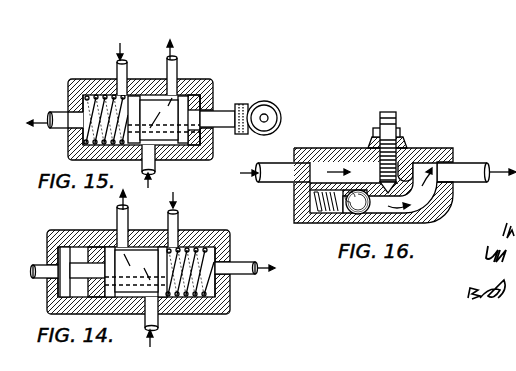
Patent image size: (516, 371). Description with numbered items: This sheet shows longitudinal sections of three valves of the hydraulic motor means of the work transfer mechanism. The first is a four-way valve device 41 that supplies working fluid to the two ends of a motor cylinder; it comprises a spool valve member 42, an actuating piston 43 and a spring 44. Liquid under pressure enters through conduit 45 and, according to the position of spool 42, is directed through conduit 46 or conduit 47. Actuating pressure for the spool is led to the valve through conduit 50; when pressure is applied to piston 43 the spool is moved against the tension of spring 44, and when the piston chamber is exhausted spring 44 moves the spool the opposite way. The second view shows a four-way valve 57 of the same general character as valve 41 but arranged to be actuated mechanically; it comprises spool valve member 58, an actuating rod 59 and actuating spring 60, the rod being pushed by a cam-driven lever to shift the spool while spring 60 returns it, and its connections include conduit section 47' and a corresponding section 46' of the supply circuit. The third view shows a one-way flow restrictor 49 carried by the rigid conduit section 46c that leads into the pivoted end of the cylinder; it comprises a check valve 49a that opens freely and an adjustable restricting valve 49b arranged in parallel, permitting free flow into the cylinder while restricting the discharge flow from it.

In FIG. 14, the four-way valve device 41 is at (227, 313).
In FIG. 14, the spool valve member 42 is at (140, 258).
In FIG. 14, the actuating piston 43 is at (62, 257).
In FIG. 14, the spring 44 is at (230, 287).
In FIG. 15, the conduit 45 is at (154, 163).
In FIG. 14, the conduit 45 is at (157, 320).
In FIG. 14, the conduit 46 is at (197, 219).
In FIG. 14, the conduit 47 is at (101, 218).
In FIG. 14, the conduit 50 is at (43, 277).
In FIG. 15, the four-way valve 57 is at (200, 80).
In FIG. 15, the spool valve member 58 is at (152, 107).
In FIG. 15, the actuating rod 59 is at (220, 115).
In FIG. 15, the actuating spring 60 is at (86, 103).
In FIG. 15, the conduit section 47' is at (107, 57).
In FIG. 15, the inlet port 46' is at (192, 57).
In FIG. 16, the rigid conduit section 46c is at (482, 142).
In FIG. 16, the one-way flow restrictor 49 is at (433, 218).
In FIG. 16, the check valve 49a is at (353, 211).
In FIG. 16, the adjustable restricting valve 49b is at (382, 168).